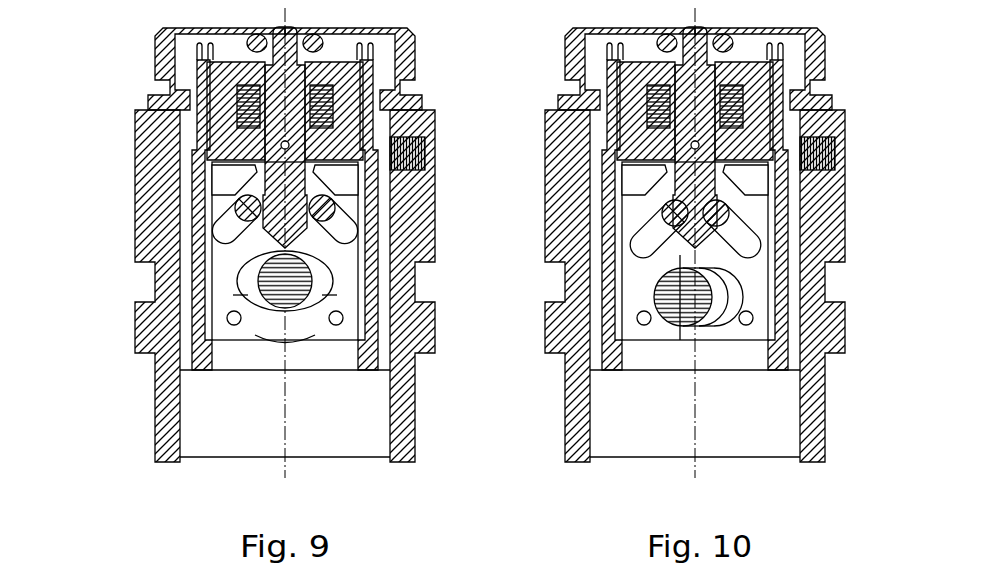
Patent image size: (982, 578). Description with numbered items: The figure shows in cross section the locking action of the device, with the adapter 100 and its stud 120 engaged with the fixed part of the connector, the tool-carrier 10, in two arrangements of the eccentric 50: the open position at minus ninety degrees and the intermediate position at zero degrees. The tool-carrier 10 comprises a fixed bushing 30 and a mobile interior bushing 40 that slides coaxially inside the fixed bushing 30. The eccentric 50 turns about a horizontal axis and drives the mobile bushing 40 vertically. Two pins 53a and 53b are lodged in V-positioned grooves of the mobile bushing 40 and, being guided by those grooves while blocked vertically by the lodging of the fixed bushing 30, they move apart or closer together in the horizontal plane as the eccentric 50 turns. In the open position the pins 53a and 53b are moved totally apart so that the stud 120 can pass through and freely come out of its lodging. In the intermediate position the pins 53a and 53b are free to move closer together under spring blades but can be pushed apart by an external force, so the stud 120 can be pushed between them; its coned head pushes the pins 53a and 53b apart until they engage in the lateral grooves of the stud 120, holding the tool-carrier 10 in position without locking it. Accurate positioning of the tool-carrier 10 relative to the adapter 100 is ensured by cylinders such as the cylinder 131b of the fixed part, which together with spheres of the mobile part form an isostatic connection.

In FIG. 9, the tool-carrier 10 is at (245, 286).
In FIG. 10, the tool-carrier 10 is at (671, 286).
In FIG. 9, the fixed bushing 30 is at (214, 251).
In FIG. 9, the mobile interior bushing 40 is at (285, 301).
In FIG. 10, the mobile interior bushing 40 is at (695, 301).
In FIG. 9, the eccentric 50 is at (277, 345).
In FIG. 10, the eccentric 50 is at (685, 347).
In FIG. 10, the pin 53a is at (585, 231).
In FIG. 10, the pin 53b is at (806, 231).
In FIG. 9, the adapter 100 is at (330, 69).
In FIG. 10, the adapter 100 is at (733, 65).
In FIG. 9, the stud 120 is at (175, 137).
In FIG. 10, the stud 120 is at (788, 137).
In FIG. 9, the cylinder 131b is at (456, 134).